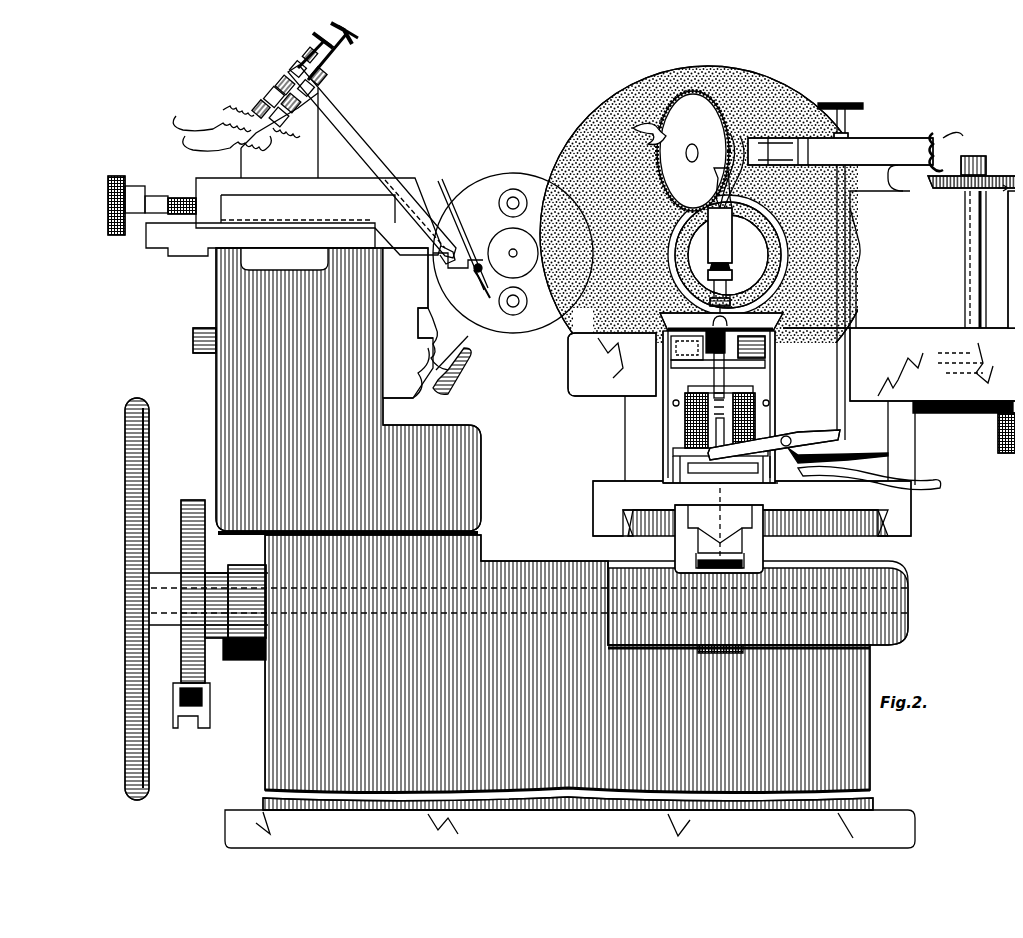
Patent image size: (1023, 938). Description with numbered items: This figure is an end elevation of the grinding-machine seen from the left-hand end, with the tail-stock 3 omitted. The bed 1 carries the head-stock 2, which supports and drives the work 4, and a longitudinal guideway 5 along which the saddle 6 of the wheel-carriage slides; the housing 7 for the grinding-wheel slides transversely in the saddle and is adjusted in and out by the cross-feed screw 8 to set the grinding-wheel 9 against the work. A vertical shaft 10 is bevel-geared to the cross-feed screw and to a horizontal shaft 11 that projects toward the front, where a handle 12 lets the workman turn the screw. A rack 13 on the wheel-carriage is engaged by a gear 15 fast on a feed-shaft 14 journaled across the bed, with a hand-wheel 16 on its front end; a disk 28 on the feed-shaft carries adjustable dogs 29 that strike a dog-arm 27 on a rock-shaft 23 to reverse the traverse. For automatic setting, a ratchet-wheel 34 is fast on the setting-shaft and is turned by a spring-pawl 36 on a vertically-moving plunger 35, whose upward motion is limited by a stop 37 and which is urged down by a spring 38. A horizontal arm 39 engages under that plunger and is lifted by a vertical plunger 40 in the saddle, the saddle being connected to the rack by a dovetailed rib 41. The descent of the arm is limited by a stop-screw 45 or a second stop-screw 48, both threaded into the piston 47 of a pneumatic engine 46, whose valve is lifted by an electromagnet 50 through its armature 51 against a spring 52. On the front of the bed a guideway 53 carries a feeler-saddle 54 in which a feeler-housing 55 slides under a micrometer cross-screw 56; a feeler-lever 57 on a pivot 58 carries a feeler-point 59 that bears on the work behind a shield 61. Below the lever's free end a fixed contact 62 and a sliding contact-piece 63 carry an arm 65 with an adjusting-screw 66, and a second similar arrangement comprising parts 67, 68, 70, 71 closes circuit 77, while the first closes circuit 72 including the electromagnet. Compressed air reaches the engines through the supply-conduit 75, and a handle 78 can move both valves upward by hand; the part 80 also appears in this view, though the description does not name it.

The bed 1 is at (856, 720).
The head-stock 2 is at (456, 322).
The tail-stock 3 is at (412, 356).
The work 4 is at (508, 228).
The longitudinal guideway 5 is at (640, 510).
The saddle of the wheel-carriage 6 is at (585, 498).
The housing for the grinding-wheel 7 is at (588, 378).
The cross-feed screw 8 is at (935, 400).
The grinding-wheel 9 is at (618, 88).
The vertical shaft 10 is at (965, 148).
The horizontal shaft 11 is at (684, 136).
The handle 12 is at (655, 135).
The rack 13 is at (700, 540).
The feed-shaft 14 is at (505, 590).
The gear 15 is at (730, 648).
The hand-wheel 16 is at (115, 442).
The rock-shaft 23 is at (215, 628).
The dog-arm 27 is at (240, 655).
The disk 28 is at (182, 490).
The dogs 29 is at (202, 700).
The ratchet-wheel 34 is at (668, 86).
The vertically-moving plunger 35 is at (728, 220).
The spring-pawl 36 is at (722, 160).
The stop 37 is at (724, 272).
The spring 38 is at (700, 262).
The horizontal arm 39 is at (676, 315).
The vertical plunger 40 is at (718, 336).
The dovetailed rib 41 is at (730, 515).
The stop-screw 45 is at (740, 358).
The pneumatic engine 46 is at (757, 338).
The piston 47 is at (663, 338).
The second stop-screw 48 is at (698, 355).
The electromagnet 50 is at (677, 410).
The armature 51 is at (680, 460).
The spring 52 is at (680, 382).
The longitudinal guideway 53 is at (320, 258).
The feeler-saddle 54 is at (218, 232).
The feeler-housing 55 is at (312, 185).
The cross-screw 56 is at (175, 189).
The feeler-lever 57 is at (375, 158).
The pivot 58 is at (466, 262).
The feeler-point 59 is at (488, 230).
The shield 61 is at (438, 172).
The fixed electrical contact 62 is at (280, 128).
The endwise-sliding contact-piece 63 is at (290, 115).
The arm 65 is at (320, 72).
The adjusting-screw 66 is at (348, 36).
The second contact arrangement part 67 is at (222, 98).
The second contact arrangement part 68 is at (262, 75).
The second contact arrangement part 70 is at (290, 52).
The second contact arrangement part 71 is at (300, 32).
The electric circuit 72 is at (219, 137).
The general supply-conduit 75 is at (845, 455).
The electric circuit 77 is at (206, 114).
The handle 78 is at (850, 98).
The handle 80 is at (890, 478).